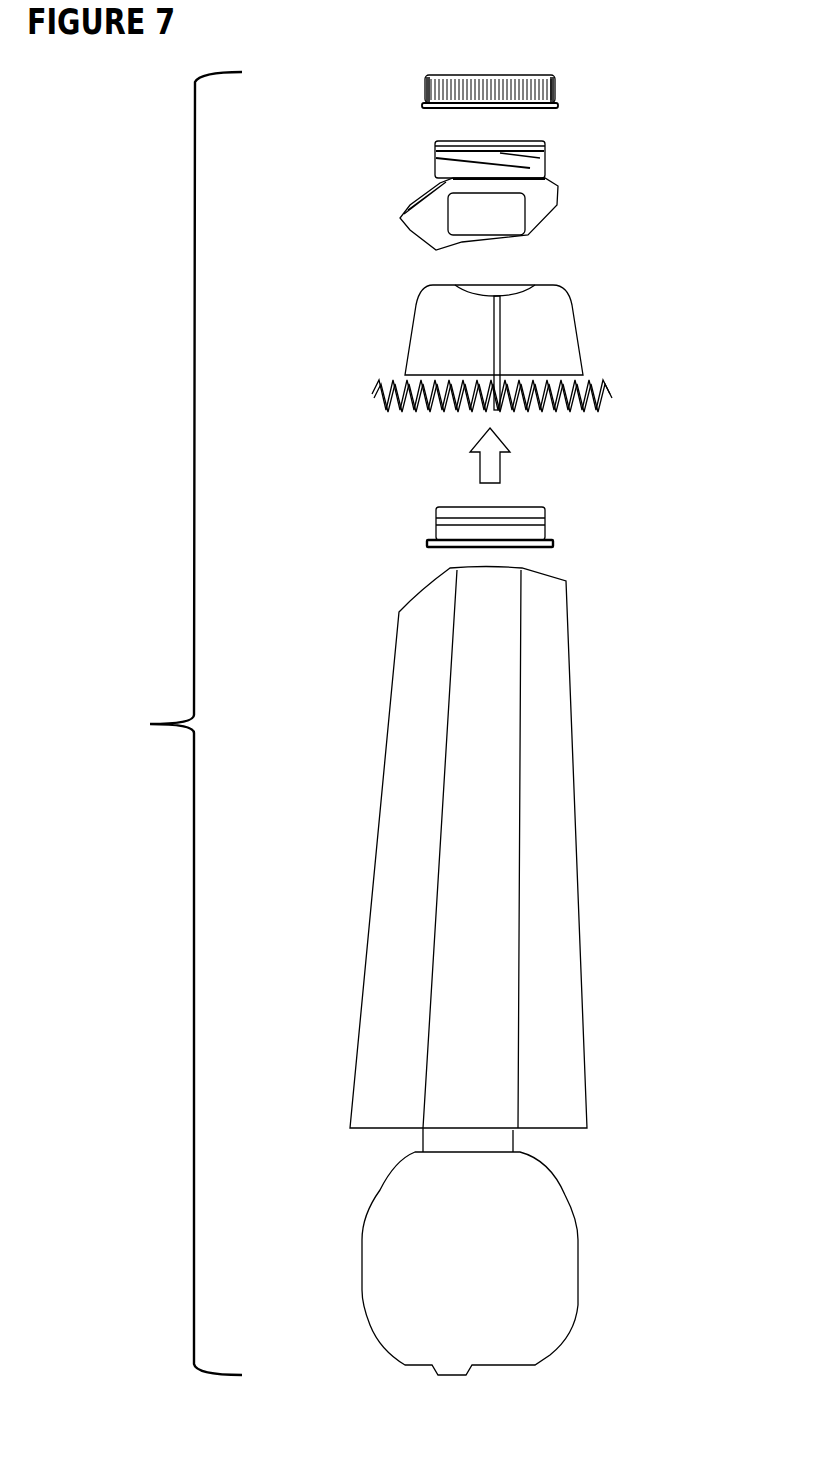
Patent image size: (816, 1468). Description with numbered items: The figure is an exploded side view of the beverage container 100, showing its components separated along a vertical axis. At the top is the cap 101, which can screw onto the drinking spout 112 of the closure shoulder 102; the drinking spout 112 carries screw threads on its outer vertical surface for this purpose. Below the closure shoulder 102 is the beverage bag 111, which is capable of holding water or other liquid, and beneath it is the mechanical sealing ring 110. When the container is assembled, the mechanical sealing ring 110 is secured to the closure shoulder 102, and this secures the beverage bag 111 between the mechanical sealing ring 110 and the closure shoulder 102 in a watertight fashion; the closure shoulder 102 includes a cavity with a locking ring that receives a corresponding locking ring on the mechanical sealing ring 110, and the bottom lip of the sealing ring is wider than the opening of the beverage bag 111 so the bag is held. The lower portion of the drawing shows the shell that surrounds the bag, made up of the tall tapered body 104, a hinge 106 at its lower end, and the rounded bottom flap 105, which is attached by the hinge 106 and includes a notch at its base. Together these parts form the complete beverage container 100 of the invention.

The beverage container 100 is at (150, 724).
The cap 101 is at (413, 106).
The closure shoulder 102 is at (425, 233).
The body 104 is at (500, 950).
The bottom flap 105 is at (520, 1253).
The hinge 106 is at (468, 1145).
The mechanical sealing ring 110 is at (565, 530).
The beverage bag 111 is at (540, 348).
The drinking spout 112 is at (568, 157).